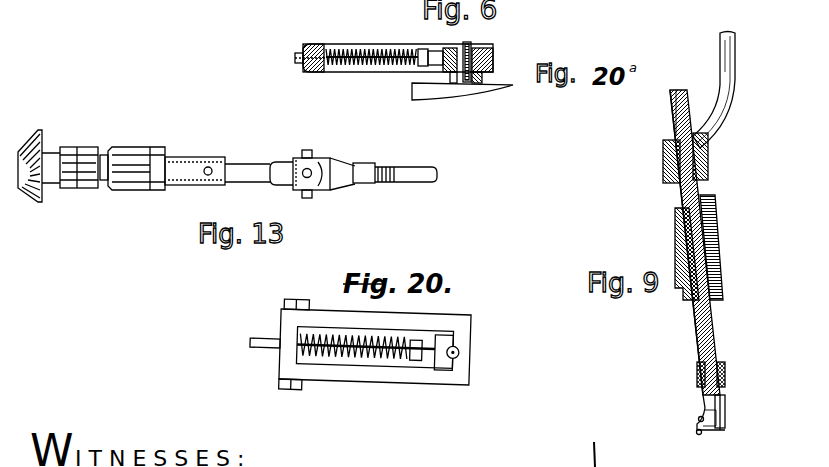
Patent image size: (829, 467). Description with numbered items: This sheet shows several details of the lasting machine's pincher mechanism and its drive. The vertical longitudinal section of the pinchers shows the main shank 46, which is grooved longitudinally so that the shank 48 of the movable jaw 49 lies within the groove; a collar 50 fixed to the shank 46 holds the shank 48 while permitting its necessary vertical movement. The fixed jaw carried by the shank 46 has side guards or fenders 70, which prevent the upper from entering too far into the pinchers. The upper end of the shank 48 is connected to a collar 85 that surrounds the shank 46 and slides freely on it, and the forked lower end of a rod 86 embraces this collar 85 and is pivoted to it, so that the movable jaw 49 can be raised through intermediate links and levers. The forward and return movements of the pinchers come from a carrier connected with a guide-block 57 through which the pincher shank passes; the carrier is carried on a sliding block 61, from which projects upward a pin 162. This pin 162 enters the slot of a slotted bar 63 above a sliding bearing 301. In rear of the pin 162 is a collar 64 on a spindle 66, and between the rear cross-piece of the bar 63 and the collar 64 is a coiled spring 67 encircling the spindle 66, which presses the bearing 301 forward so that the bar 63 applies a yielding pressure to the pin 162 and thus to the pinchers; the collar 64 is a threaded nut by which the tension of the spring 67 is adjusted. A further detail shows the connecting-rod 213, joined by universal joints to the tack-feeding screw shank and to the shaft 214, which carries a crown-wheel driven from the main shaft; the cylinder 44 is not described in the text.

In FIG. 20A, the cylinder 44 is at (425, 51).
In FIG. 9, the shank 46 is at (708, 321).
In FIG. 9, the shank 48 is at (696, 336).
In FIG. 9, the movable jaw 49 is at (699, 419).
In FIG. 9, the collar 50 is at (726, 375).
In FIG. 9, the guide-block 57 is at (722, 247).
In FIG. 20A, the block 61 is at (477, 98).
In FIG. 20A, the slotted bar 63 is at (345, 72).
In FIG. 20, the slotted bar 63 is at (375, 344).
In FIG. 20A, the collar 64 is at (377, 54).
In FIG. 20, the collar 64 is at (415, 362).
In FIG. 20, the spindle 66 is at (272, 353).
In FIG. 20A, the coiled spring 67 is at (353, 56).
In FIG. 20, the coiled spring 67 is at (365, 358).
In FIG. 9, the side guards or fenders 70 is at (697, 432).
In FIG. 9, the collar 85 is at (760, 163).
In FIG. 9, the forked rod 86 is at (736, 97).
In FIG. 20A, the pin 162 is at (472, 42).
In FIG. 20, the pin 162 is at (459, 351).
In FIG. 13, the connecting-rod 213 is at (396, 168).
In FIG. 13, the shaft 214 is at (226, 160).
In FIG. 20A, the sliding bearing 301 is at (450, 70).
In FIG. 20, the sliding bearing 301 is at (451, 335).